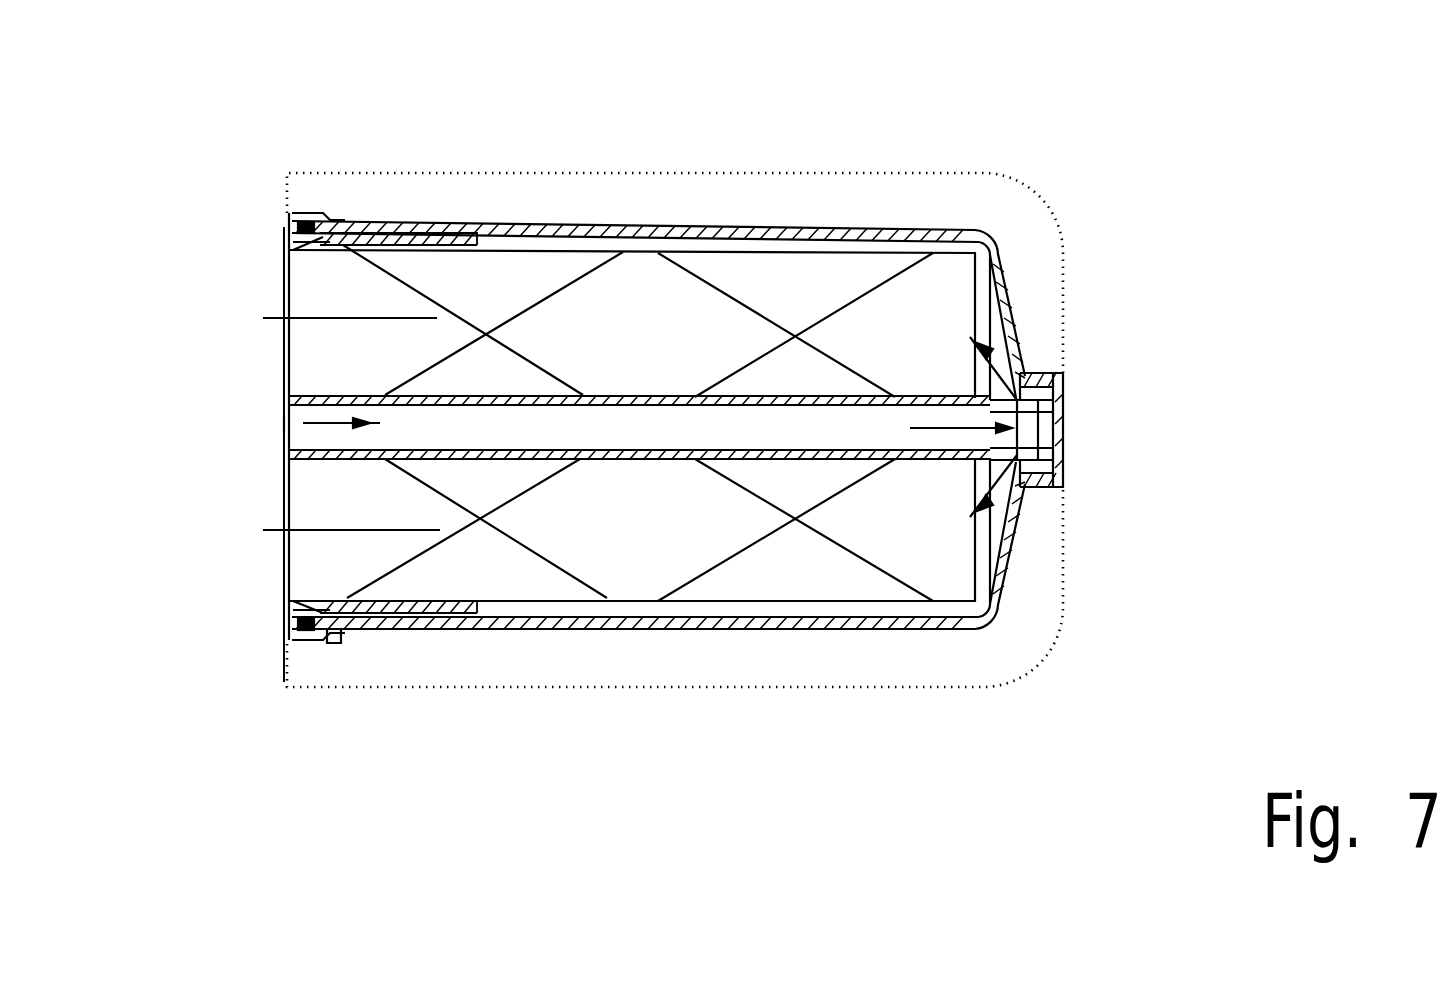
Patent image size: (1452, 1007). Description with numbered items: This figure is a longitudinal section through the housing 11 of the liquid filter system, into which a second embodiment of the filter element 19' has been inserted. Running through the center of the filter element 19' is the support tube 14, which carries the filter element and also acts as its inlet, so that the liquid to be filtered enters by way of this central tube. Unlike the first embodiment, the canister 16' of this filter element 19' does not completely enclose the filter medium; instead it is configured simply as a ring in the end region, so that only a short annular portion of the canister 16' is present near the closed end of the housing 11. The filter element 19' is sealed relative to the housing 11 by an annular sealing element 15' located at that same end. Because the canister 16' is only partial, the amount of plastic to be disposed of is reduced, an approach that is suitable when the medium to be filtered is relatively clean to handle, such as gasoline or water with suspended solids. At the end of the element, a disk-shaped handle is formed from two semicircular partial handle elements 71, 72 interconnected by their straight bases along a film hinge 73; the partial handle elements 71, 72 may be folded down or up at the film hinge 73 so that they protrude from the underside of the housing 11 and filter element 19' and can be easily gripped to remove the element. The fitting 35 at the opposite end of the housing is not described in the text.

The housing 11 is at (794, 228).
The support tube 14 is at (628, 462).
The annular sealing element 15' is at (328, 348).
The canister 16' is at (398, 333).
The filter element 19' is at (638, 327).
The neck / connection fitting 35 is at (1065, 492).
The partial handle element 71 is at (288, 335).
The partial handle element 72 is at (288, 595).
The film hinge 73 is at (286, 424).